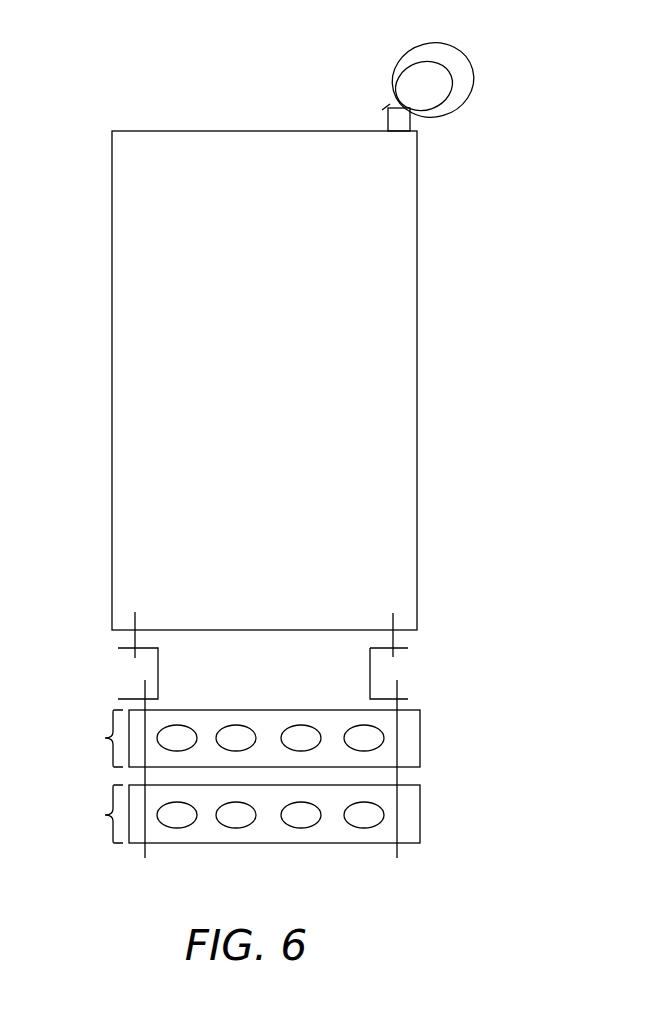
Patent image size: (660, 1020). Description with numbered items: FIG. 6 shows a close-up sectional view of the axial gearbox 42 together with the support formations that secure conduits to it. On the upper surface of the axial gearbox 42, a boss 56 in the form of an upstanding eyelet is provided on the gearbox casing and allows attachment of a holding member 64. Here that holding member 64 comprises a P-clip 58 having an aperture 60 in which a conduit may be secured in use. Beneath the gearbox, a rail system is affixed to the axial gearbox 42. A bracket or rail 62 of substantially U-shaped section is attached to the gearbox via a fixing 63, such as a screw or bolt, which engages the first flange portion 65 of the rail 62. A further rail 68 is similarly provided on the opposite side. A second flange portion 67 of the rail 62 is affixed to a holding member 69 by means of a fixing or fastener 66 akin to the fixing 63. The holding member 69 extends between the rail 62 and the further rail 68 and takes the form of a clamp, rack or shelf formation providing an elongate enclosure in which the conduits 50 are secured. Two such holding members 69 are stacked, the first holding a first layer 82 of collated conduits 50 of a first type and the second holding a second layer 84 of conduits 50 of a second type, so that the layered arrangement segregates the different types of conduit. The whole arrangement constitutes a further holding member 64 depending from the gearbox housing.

The axial gearbox 42 is at (498, 238).
The boss 56 is at (393, 110).
The P-clip 58 is at (473, 80).
The aperture 60 is at (411, 80).
The holding member 64 is at (478, 63).
The fixing 63 is at (393, 615).
The first flange portion 65 is at (402, 647).
The rail 62 is at (371, 667).
The further rail 68 is at (157, 668).
The second flange portion 67 is at (397, 688).
The fixing/fastener 66 is at (400, 723).
The holding member 69 is at (420, 752).
The conduit 50 is at (229, 743).
The first layer 82 is at (92, 738).
The second layer 84 is at (92, 814).